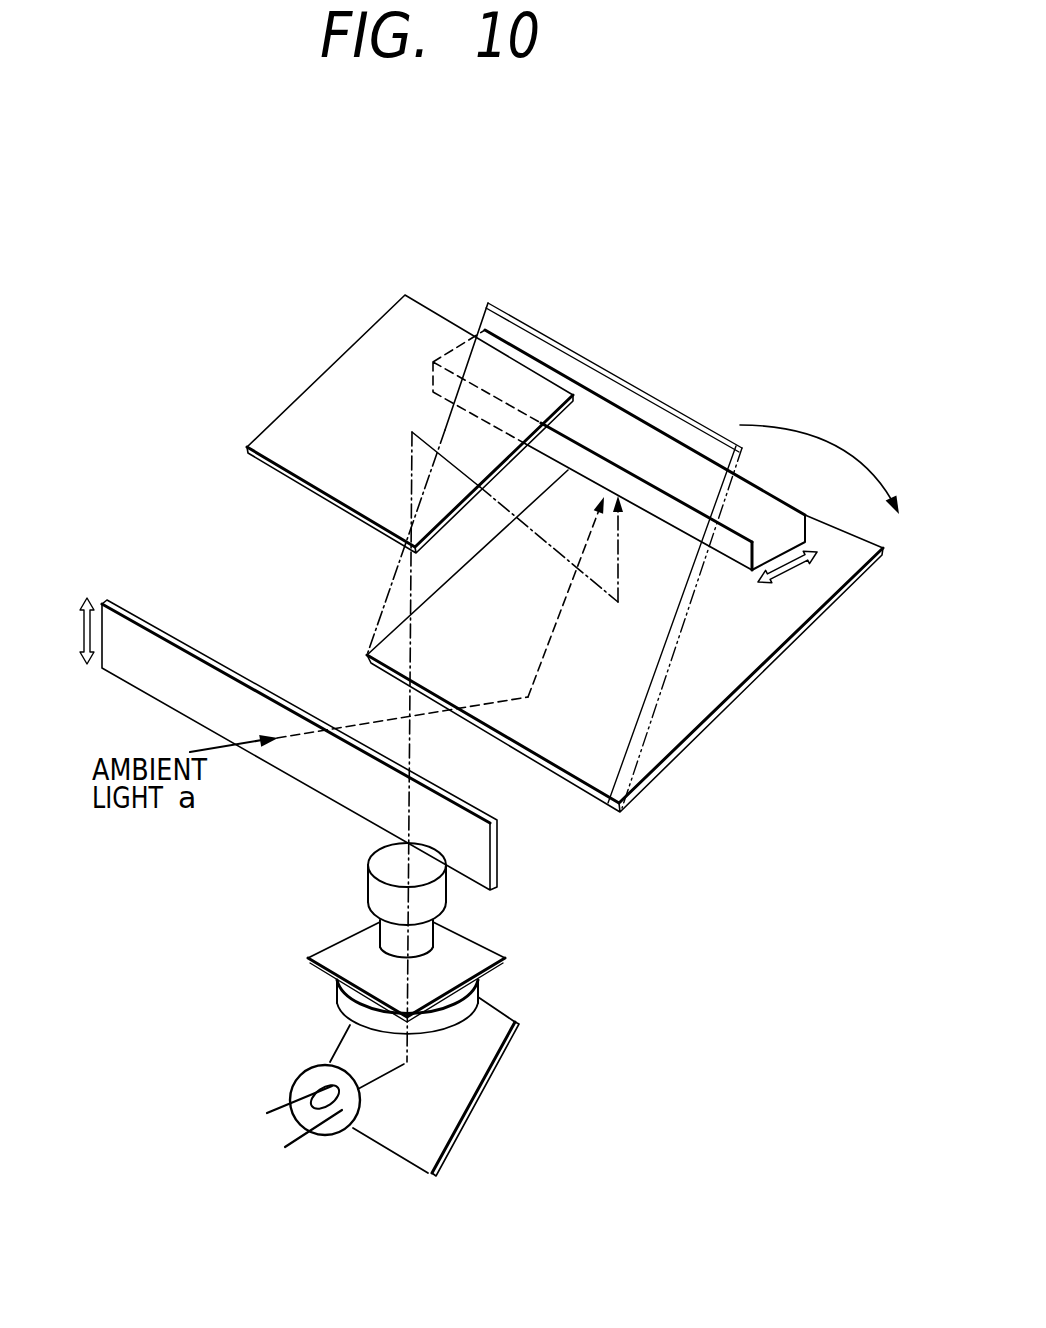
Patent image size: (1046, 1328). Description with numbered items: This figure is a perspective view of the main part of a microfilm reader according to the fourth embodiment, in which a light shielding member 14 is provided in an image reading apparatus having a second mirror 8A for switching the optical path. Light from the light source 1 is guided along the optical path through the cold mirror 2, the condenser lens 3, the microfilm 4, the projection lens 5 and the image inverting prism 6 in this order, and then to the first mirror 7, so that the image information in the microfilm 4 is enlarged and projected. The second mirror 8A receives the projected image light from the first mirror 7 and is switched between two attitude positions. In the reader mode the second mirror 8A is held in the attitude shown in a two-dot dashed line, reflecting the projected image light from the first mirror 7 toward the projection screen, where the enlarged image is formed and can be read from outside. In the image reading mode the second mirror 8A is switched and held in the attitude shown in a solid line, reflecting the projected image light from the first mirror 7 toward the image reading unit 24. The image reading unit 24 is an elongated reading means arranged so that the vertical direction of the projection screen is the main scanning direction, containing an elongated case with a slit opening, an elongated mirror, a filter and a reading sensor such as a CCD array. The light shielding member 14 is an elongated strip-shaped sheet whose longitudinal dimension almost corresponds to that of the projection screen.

The light source 1 is at (302, 1082).
The cold mirror 2 is at (457, 1095).
The condenser lens 3 is at (467, 1010).
The microfilm 4 is at (487, 953).
The projection lens 5 is at (423, 930).
The image inverting prism 6 is at (385, 863).
The first mirror 7 is at (387, 340).
The second mirror 8A is at (655, 397).
The light shielding member 14 is at (132, 672).
The image reading unit 24 is at (556, 369).